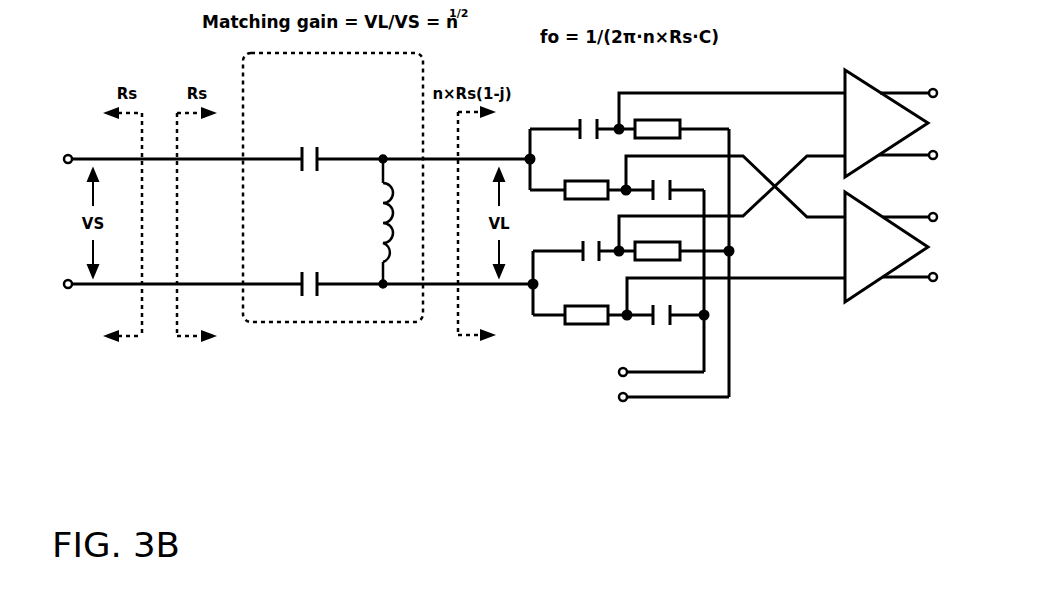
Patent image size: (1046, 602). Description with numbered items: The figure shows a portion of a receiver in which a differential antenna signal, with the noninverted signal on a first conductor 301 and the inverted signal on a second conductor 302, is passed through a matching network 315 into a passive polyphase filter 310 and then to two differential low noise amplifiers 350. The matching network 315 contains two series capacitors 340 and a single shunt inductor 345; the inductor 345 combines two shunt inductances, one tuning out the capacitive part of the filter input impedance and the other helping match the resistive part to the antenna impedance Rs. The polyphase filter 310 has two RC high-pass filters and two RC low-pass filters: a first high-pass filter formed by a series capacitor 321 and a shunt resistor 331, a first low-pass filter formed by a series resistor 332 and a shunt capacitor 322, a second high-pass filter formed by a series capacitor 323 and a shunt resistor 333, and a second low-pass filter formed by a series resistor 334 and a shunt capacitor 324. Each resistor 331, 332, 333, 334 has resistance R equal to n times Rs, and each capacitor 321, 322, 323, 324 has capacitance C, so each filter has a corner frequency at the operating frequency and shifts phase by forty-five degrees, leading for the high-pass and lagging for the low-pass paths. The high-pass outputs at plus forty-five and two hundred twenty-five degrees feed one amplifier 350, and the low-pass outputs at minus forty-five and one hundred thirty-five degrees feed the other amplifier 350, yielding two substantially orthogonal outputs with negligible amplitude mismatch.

The first conductor 301 is at (124, 157).
The second conductor 302 is at (124, 286).
The polyphase filter 310 is at (672, 269).
The matching network 315 is at (388, 214).
The first capacitor 321 is at (587, 114).
The second capacitor 322 is at (661, 179).
The third capacitor 323 is at (588, 240).
The fourth capacitor 324 is at (667, 336).
The first resistor 331 is at (647, 118).
The second resistor 332 is at (598, 180).
The third resistor 333 is at (640, 241).
The fourth resistor 334 is at (600, 305).
The matching capacitors 340 is at (310, 173).
The inductor 345 is at (382, 205).
The differential low noise amplifier 350 is at (862, 173).